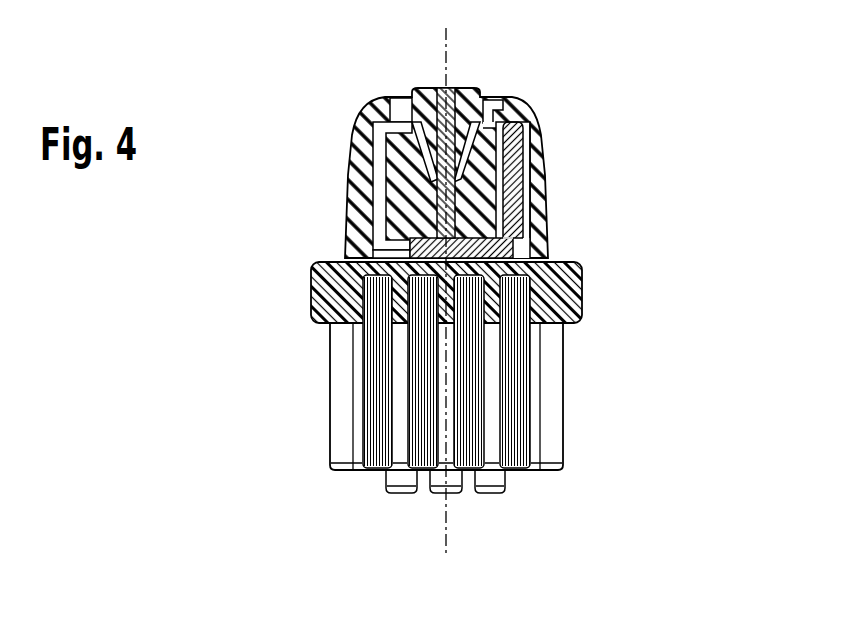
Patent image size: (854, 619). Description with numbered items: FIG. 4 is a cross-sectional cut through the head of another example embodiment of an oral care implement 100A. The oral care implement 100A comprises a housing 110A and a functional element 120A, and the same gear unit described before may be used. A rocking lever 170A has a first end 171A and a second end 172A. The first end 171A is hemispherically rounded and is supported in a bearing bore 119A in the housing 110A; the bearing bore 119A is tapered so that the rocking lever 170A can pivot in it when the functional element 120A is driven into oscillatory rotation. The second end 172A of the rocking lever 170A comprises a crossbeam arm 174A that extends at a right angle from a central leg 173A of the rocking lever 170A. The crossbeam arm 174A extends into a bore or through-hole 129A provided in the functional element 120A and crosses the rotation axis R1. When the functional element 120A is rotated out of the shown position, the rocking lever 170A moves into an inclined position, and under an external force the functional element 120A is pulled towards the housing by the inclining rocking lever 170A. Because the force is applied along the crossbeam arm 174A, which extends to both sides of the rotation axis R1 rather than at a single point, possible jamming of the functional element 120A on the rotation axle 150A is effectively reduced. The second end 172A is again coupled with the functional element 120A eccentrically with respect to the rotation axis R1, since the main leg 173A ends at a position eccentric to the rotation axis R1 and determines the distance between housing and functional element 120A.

The oral care implement 100A is at (494, 279).
The housing 110A is at (370, 113).
The bearing bore 119A is at (500, 104).
The functional element 120A is at (599, 294).
The through-hole 129A is at (400, 253).
The rotation axle 150A is at (455, 95).
The rocking lever 170A is at (521, 183).
The first end 171A is at (527, 134).
The second end 172A is at (520, 247).
The central leg 173A is at (520, 163).
The crossbeam arm 174A is at (412, 242).
The rotation axis R1 is at (445, 38).